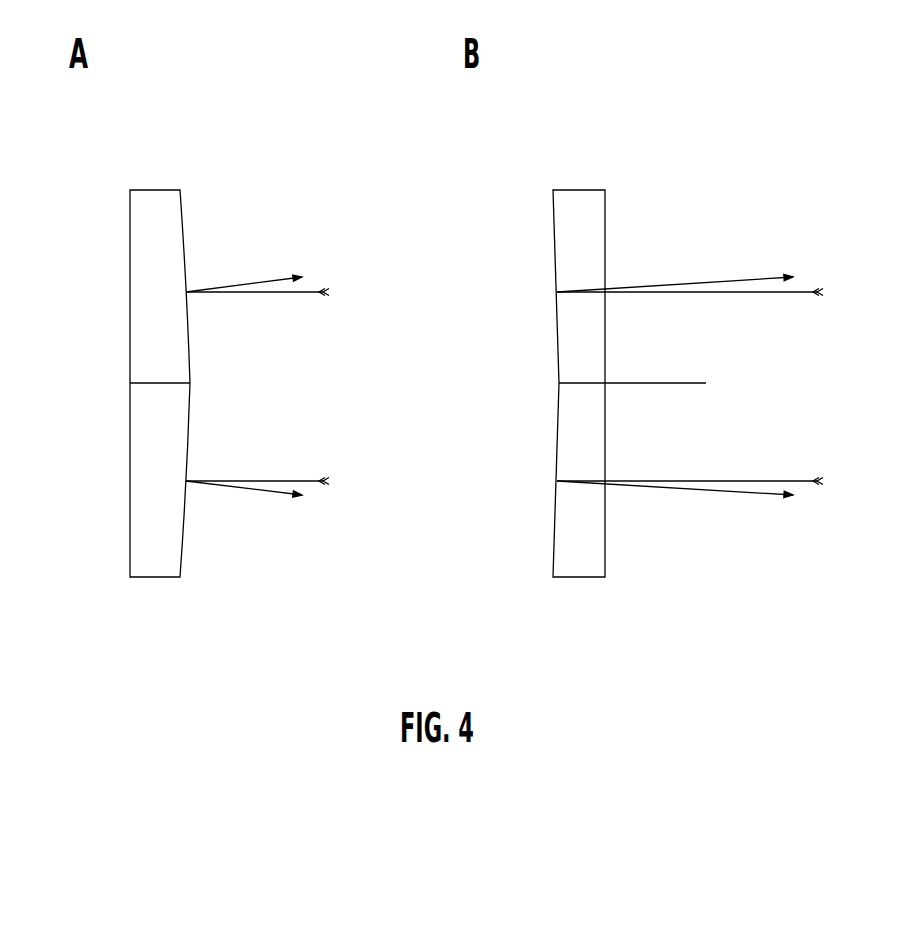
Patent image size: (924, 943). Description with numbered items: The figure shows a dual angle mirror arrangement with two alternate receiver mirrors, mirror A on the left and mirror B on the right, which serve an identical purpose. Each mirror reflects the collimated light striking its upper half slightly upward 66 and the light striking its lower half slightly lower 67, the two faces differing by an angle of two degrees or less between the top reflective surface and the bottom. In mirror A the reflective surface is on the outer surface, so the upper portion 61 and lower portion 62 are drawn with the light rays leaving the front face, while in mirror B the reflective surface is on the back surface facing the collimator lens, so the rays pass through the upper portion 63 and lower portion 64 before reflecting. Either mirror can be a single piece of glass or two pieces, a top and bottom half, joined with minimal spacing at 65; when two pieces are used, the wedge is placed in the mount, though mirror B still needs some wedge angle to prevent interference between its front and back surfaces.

The first prism portion of first optical element 61 is at (185, 235).
The second prism portion of first optical element 62 is at (183, 532).
The first prism portion of second optical element 63 is at (553, 235).
The second prism portion of second optical element 64 is at (554, 527).
The minimal spacing 65 is at (130, 383).
The upward reflected light 66 is at (321, 277).
The lower reflected light 67 is at (322, 497).